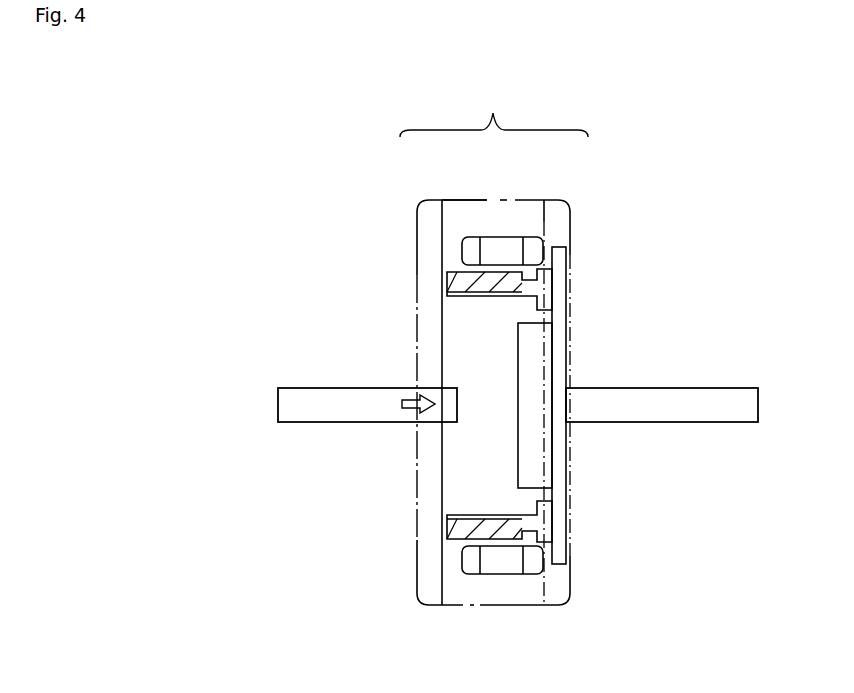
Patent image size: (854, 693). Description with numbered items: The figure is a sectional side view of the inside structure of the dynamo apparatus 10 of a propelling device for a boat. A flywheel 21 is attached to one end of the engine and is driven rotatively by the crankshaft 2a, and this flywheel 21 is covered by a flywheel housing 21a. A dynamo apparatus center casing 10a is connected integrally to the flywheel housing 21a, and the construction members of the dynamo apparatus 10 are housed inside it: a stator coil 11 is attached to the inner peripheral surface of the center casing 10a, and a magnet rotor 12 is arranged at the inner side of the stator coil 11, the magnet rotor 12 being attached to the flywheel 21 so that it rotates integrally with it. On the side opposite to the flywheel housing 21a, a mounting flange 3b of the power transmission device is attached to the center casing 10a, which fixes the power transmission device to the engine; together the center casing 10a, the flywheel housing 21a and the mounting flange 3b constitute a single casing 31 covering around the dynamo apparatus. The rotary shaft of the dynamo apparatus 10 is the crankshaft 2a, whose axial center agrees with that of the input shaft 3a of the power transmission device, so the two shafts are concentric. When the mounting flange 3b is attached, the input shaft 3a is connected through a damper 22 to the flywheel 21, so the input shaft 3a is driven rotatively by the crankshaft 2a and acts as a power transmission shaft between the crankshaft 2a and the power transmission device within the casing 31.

The dynamo apparatus 10 is at (497, 622).
The dynamo apparatus center casing 10a is at (482, 199).
The stator coil 11 is at (462, 253).
The magnet rotor 12 is at (447, 281).
The flywheel 21 is at (566, 475).
The flywheel housing 21a is at (553, 199).
The damper 22 is at (518, 453).
The crankshaft 2a is at (648, 388).
The input shaft 3a is at (334, 387).
The mounting flange 3b is at (425, 199).
The casing 31 is at (494, 112).